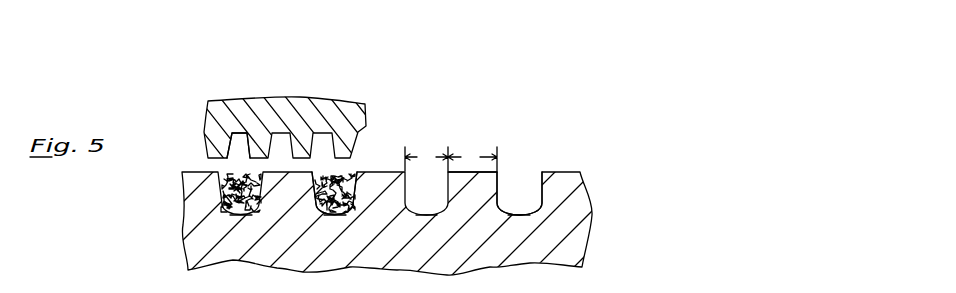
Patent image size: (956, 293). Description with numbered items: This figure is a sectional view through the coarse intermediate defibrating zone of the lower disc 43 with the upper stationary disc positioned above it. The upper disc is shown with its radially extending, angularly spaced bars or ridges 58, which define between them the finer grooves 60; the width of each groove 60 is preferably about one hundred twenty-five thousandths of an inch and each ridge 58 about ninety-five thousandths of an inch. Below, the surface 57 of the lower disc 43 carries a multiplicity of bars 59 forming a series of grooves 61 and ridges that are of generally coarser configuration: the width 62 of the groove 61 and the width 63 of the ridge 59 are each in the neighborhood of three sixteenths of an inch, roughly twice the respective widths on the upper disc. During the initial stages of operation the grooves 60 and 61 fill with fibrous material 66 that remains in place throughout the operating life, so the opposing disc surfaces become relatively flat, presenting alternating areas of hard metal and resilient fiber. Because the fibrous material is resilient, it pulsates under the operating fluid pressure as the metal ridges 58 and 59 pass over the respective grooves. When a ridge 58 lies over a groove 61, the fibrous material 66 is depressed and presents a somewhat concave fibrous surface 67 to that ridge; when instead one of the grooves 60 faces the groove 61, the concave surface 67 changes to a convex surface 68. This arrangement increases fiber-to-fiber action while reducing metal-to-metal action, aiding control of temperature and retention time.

The lower disc 43 is at (577, 241).
The surface of the lower disc 57 is at (528, 214).
The ridges 58 is at (340, 128).
The bars 59 is at (485, 182).
The groove 60 is at (235, 138).
The groove 61 is at (243, 217).
The width of the groove 62 is at (426, 158).
The width of the ridge 63 is at (472, 158).
The fibrous material 66 is at (345, 168).
The concave fibrous surface 67 is at (323, 168).
The convex surface 68 is at (242, 168).